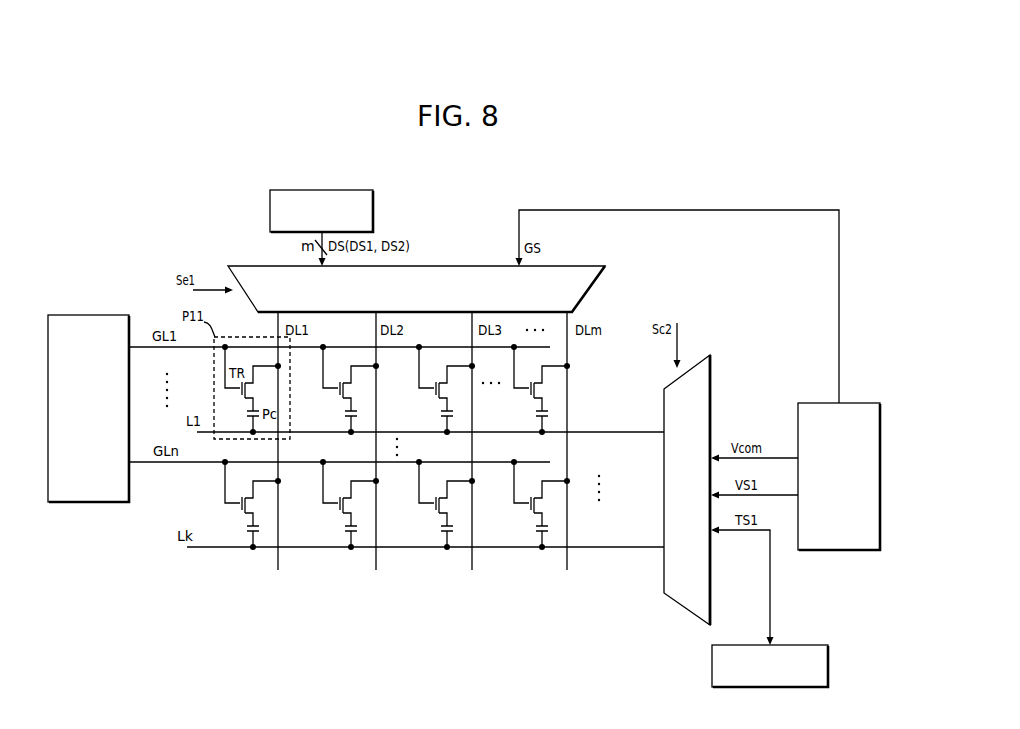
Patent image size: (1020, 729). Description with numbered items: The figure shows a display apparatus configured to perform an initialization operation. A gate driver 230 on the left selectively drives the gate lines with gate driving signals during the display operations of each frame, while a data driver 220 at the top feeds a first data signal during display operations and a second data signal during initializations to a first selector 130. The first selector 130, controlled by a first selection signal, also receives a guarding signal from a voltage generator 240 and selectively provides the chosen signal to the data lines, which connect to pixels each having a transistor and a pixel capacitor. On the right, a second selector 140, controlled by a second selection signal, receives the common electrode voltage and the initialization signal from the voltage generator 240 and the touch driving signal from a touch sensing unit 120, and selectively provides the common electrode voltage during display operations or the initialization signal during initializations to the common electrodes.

The data driver 220 is at (268, 214).
The first selector 130 is at (238, 265).
The gate driver 230 is at (88, 503).
The second selector 140 is at (713, 585).
The voltage generator 240 is at (838, 550).
The touch sensing unit 120 is at (830, 666).